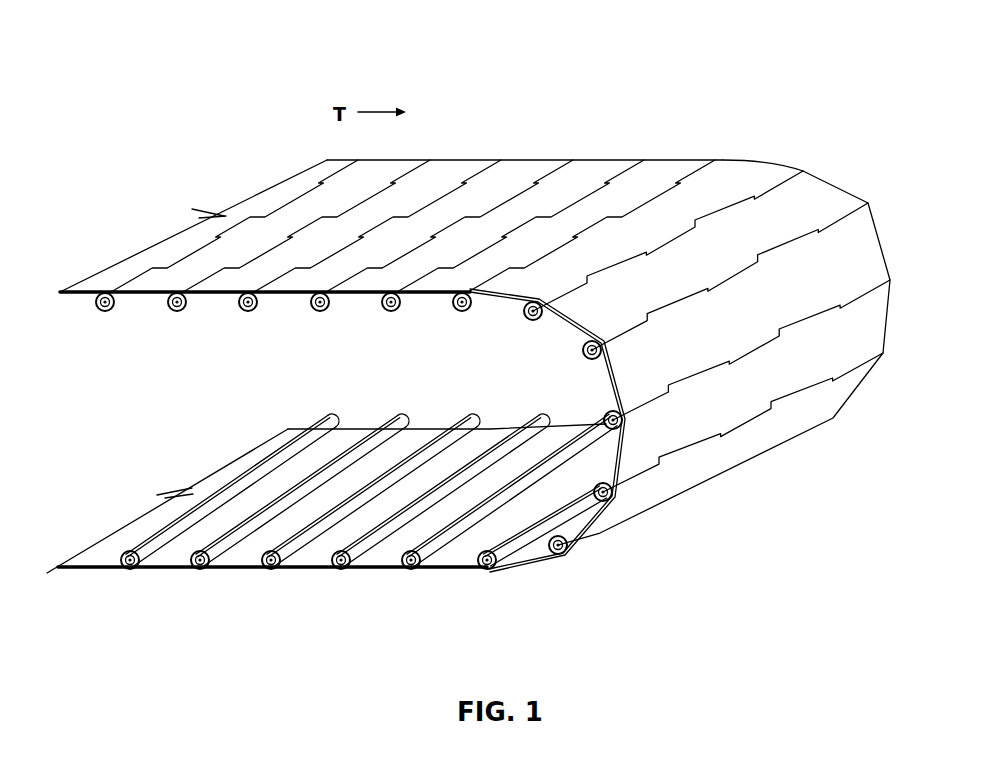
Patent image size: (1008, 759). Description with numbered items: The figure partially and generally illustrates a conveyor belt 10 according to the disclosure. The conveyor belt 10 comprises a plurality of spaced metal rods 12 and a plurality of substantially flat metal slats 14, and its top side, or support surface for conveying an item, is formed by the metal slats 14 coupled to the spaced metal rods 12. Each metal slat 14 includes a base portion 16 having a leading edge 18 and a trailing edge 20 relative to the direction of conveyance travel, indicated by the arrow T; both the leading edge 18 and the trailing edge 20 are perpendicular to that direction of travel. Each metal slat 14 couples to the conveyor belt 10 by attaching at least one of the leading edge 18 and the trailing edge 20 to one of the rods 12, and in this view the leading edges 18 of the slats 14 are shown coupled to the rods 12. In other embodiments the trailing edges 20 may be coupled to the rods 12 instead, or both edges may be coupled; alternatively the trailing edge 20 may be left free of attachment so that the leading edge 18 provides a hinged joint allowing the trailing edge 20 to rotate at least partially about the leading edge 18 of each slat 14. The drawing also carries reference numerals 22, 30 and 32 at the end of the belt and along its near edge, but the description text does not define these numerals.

The conveyor belt 10 is at (724, 68).
The spaced metal rods 12 is at (314, 302).
The metal slats 14 is at (601, 236).
The base portion 16 is at (655, 215).
The trailing edge 20 is at (697, 170).
The belt edge 32 is at (760, 165).
The leading edge 18 is at (788, 182).
The side edge 30 is at (500, 298).
The end roller 22 is at (588, 354).